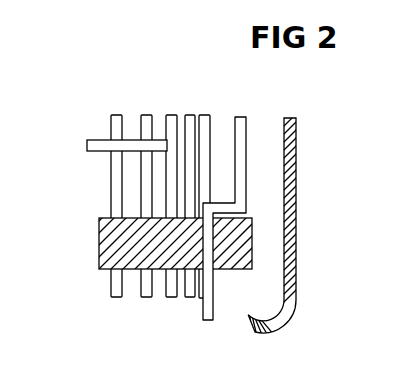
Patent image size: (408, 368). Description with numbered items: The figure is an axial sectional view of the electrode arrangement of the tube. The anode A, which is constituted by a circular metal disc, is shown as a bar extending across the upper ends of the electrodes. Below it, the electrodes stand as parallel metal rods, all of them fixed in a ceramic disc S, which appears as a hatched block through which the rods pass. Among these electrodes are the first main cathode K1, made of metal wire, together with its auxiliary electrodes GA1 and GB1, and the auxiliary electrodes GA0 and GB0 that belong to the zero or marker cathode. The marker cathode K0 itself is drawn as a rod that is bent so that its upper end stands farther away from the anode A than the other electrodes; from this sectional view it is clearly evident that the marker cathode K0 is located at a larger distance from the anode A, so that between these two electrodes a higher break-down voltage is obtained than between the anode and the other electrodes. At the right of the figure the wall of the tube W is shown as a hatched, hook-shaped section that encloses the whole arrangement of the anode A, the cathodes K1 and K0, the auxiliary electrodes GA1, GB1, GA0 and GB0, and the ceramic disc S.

The anode A is at (98, 145).
The auxiliary electrode GB1 is at (117, 120).
The auxiliary electrode GA1 is at (147, 120).
The main cathode K1 is at (171, 112).
The auxiliary electrode GB0 is at (189, 118).
The auxiliary electrode GA0 is at (207, 118).
The zero cathode K0 is at (243, 125).
The ceramic disc S is at (115, 233).
The wall of the tube W is at (293, 302).